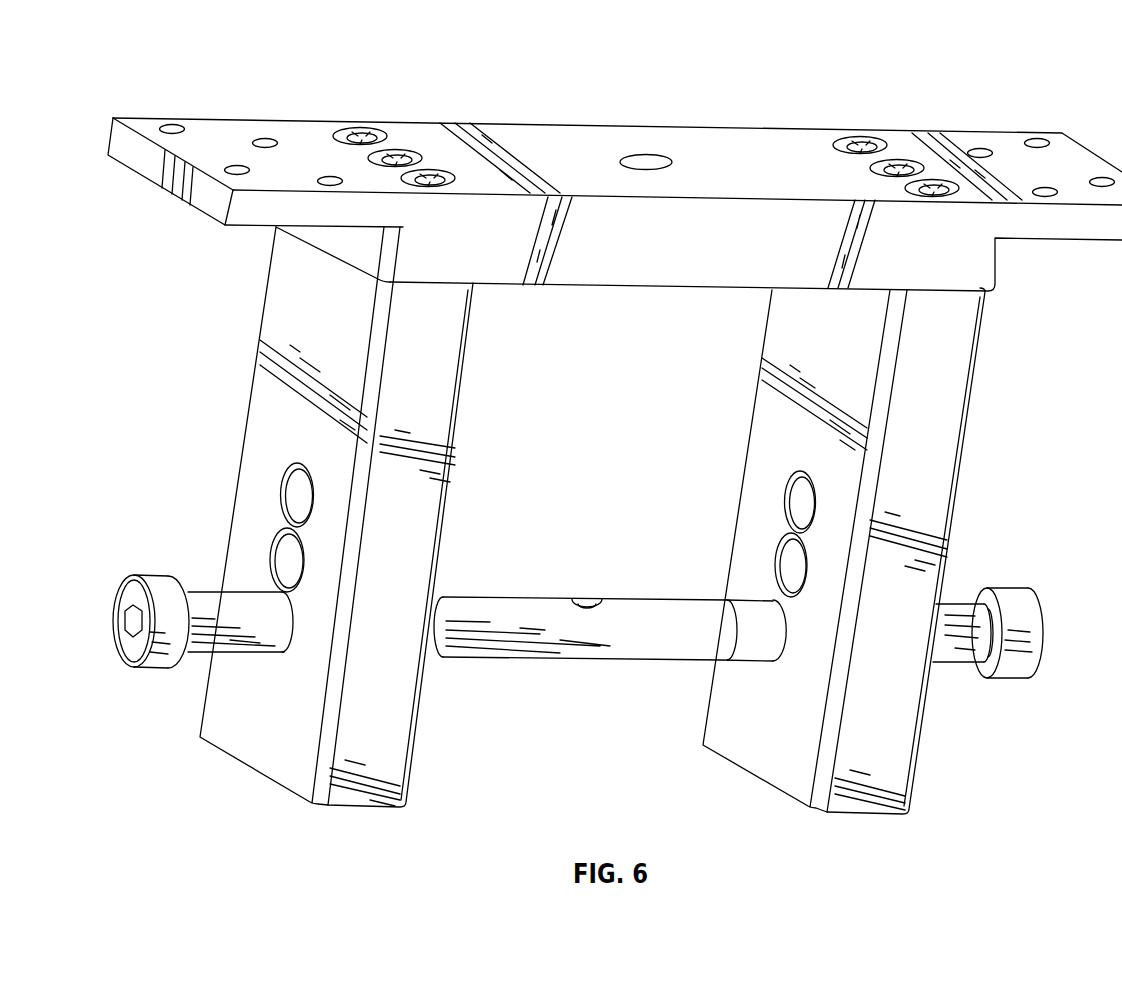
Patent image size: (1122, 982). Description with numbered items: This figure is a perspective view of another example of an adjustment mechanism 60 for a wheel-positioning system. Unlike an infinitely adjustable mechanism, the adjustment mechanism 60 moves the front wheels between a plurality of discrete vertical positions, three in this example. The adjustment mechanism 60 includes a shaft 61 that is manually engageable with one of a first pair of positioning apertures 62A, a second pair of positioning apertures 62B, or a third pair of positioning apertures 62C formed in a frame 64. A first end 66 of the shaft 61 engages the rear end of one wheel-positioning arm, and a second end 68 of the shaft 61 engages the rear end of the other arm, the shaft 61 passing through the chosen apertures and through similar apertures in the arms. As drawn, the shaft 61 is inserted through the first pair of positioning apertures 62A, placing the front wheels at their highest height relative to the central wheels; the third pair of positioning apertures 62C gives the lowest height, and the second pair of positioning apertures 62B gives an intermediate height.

The adjustment mechanism 60 is at (1010, 73).
The shaft 61 is at (580, 650).
The first pair of positioning apertures 62A is at (278, 660).
The second pair of positioning apertures 62B is at (270, 562).
The third pair of positioning apertures 62C is at (281, 496).
The frame 64 is at (707, 147).
The first end 66 is at (200, 643).
The second end 68 is at (950, 654).